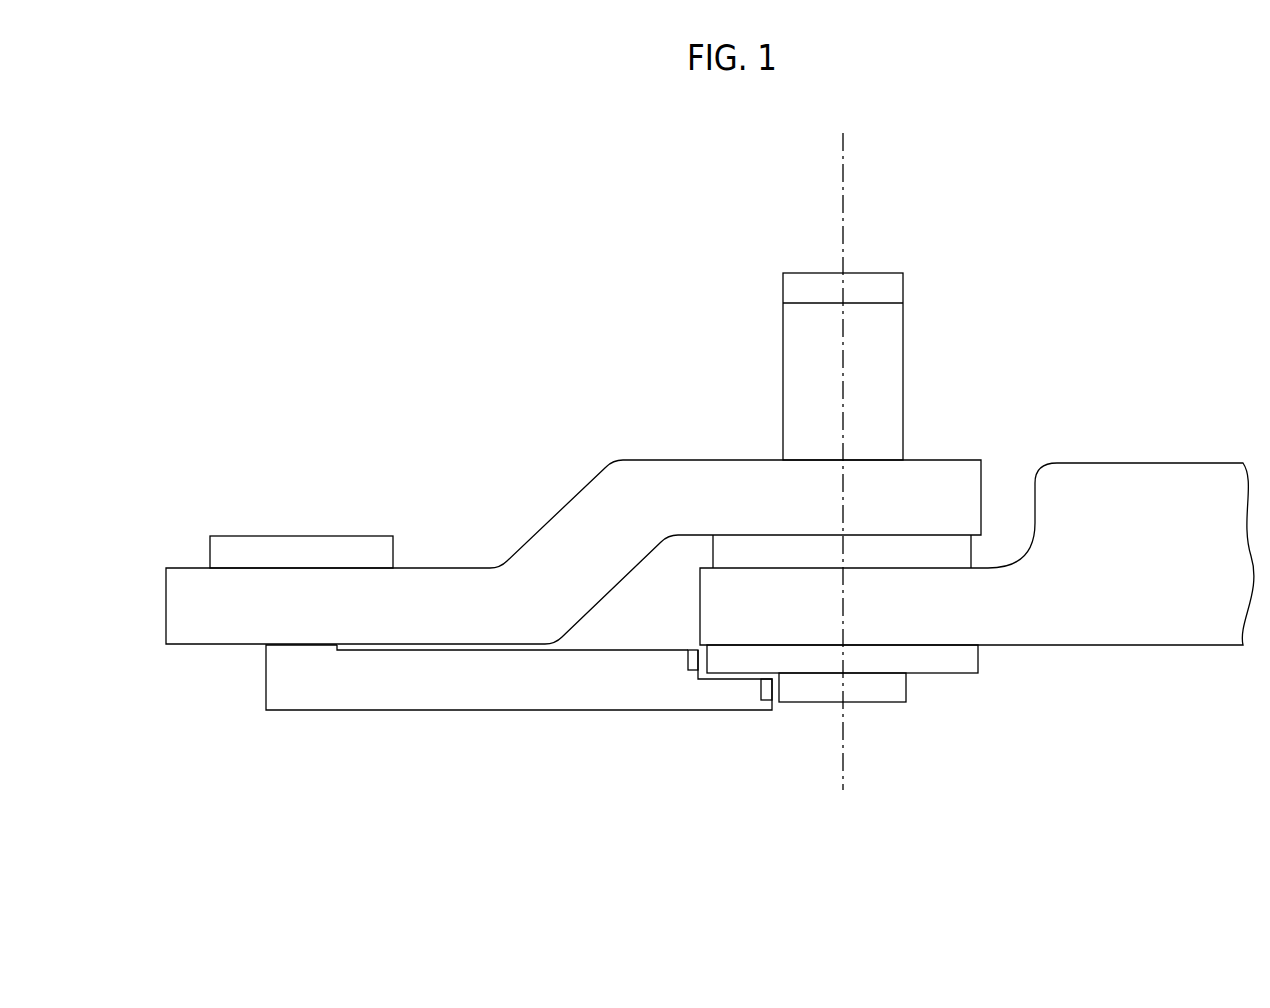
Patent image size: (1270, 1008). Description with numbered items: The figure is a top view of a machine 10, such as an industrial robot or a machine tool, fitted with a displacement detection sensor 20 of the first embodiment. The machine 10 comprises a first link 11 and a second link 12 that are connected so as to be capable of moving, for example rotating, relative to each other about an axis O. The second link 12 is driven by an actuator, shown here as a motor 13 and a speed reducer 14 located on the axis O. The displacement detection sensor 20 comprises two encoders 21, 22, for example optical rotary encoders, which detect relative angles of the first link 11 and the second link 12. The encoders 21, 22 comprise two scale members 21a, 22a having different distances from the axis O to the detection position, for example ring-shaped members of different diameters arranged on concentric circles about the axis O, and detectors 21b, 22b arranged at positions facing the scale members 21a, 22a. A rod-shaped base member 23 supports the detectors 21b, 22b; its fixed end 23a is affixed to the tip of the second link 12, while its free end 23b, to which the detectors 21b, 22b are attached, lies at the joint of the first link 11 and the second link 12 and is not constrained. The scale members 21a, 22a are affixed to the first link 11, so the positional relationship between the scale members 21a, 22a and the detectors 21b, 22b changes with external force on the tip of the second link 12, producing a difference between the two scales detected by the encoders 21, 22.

The axis O is at (843, 203).
The machine 10 is at (1020, 203).
The first link 11 is at (1123, 478).
The second link 12 is at (567, 530).
The motor 13 is at (883, 350).
The speed reducer 14 is at (915, 552).
The displacement detection sensor 20 is at (800, 758).
The encoder 21 is at (948, 767).
The scale member 21a is at (893, 683).
The detector 21b is at (766, 689).
The encoder 22 is at (706, 743).
The scale member 22a is at (745, 658).
The detector 22b is at (688, 660).
The base member 23 is at (462, 738).
The fixed end 23a is at (295, 665).
The free end 23b is at (738, 698).